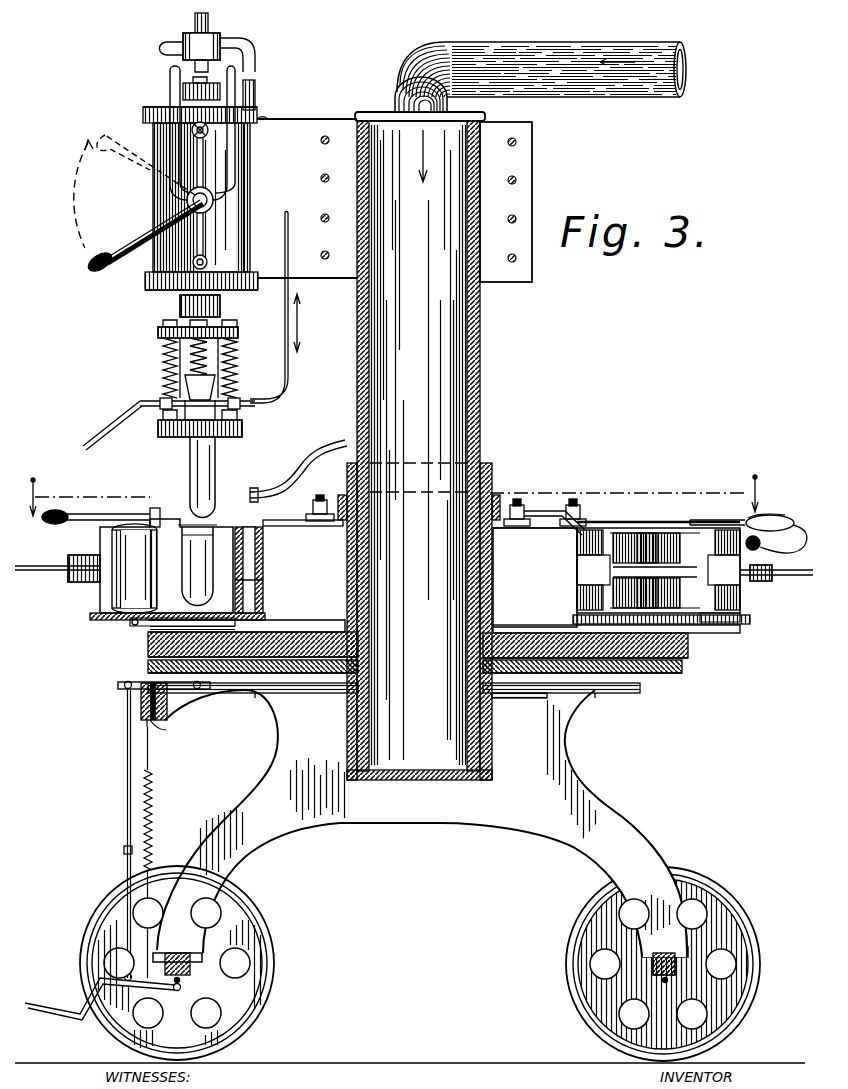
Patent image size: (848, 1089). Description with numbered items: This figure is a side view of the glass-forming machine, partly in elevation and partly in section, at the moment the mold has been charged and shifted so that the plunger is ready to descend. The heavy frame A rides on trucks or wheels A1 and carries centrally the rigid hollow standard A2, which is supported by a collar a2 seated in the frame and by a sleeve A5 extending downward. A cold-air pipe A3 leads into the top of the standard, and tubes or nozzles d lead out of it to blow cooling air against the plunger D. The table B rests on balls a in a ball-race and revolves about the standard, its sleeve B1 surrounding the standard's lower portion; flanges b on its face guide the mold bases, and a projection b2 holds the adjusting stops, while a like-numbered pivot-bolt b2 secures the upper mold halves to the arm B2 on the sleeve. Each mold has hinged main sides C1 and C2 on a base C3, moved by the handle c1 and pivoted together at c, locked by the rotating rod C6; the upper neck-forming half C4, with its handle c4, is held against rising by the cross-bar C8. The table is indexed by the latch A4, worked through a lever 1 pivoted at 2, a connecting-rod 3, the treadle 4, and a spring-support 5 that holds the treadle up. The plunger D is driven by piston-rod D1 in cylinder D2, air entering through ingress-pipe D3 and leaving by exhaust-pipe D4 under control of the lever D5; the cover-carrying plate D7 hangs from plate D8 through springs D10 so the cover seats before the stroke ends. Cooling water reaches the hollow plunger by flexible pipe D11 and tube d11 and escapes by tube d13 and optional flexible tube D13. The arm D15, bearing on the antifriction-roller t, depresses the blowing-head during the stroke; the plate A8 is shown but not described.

The frame A is at (622, 800).
The trucks or wheels A1 is at (252, 945).
The hollow stem or standard A2 is at (506, 360).
The cold-air pipe A3 is at (655, 99).
The latch A4 is at (152, 722).
The sleeve A5 is at (347, 738).
The supporting plate A8 is at (394, 235).
The balls a is at (255, 695).
The collar a2 is at (498, 694).
The rotating table B is at (148, 649).
The sleeve B1 is at (497, 478).
The arm B2 is at (406, 573).
The flanges b is at (300, 622).
The projection / pivot-bolt b2 is at (320, 499).
The main mold side C1 is at (112, 594).
The main mold side C2 is at (263, 543).
The mold base C3 is at (130, 622).
The upper mold half C4 is at (165, 508).
The rotating rod C6 is at (784, 527).
The cross-bar C8 is at (585, 512).
The pivots c is at (264, 580).
The handle c1 is at (40, 567).
The handle c4 is at (52, 511).
The plunger or perforator D is at (207, 462).
The piston-rod D1 is at (210, 24).
The cylinder D2 is at (160, 185).
The ingress-pipe D3 is at (237, 78).
The exhaust-pipe D4 is at (170, 90).
The lever D5 is at (150, 236).
The plate D7 is at (244, 432).
The plate D8 is at (239, 333).
The springs D10 is at (165, 380).
The flexible pipe D11 is at (289, 382).
The flexible tube D13 is at (105, 432).
The arm D15 is at (257, 55).
The tubes or nozzles d is at (326, 462).
The projecting tube d11 is at (245, 408).
The tube d13 is at (158, 410).
The antifriction-roller t is at (268, 118).
The lever 1 is at (122, 686).
The pivot 2 is at (394, 600).
The connecting-rod 3 is at (127, 772).
The treadle 4 is at (82, 1012).
The spring-support 5 is at (155, 820).